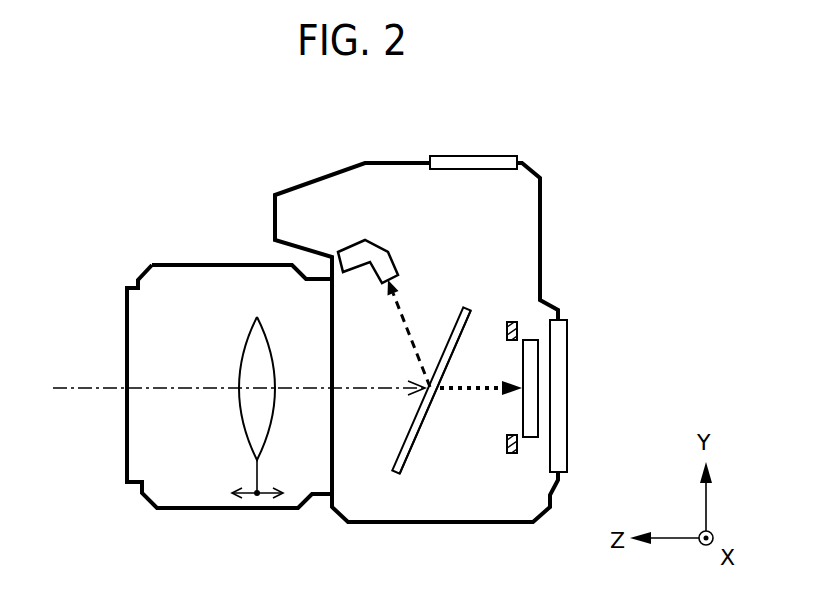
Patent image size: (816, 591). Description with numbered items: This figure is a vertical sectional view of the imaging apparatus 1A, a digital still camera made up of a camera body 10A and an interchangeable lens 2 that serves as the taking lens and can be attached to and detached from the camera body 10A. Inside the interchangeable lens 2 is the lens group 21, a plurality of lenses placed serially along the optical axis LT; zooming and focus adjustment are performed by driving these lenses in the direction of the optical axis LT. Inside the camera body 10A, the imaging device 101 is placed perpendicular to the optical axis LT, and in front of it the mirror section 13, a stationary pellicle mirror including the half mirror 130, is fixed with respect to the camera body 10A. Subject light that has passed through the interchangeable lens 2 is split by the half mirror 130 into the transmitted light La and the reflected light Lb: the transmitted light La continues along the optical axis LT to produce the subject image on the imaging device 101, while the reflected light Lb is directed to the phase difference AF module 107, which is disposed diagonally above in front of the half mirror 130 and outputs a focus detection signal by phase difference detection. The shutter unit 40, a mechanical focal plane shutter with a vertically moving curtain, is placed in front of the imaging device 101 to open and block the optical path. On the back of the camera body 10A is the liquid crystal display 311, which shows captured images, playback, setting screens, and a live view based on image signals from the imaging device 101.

The imaging apparatus 1A is at (162, 134).
The interchangeable lens 2 is at (212, 253).
The lens group 21 is at (240, 322).
The camera body 10A is at (337, 155).
The phase difference AF module 107 is at (398, 264).
The shutter unit 40 is at (512, 322).
The imaging device 101 is at (528, 340).
The liquid crystal display 311 is at (562, 393).
The mirror section 13 is at (396, 438).
The half mirror 130 is at (415, 443).
The transmitted light La is at (459, 392).
The reflected light Lb is at (400, 315).
The optical axis LT is at (188, 392).